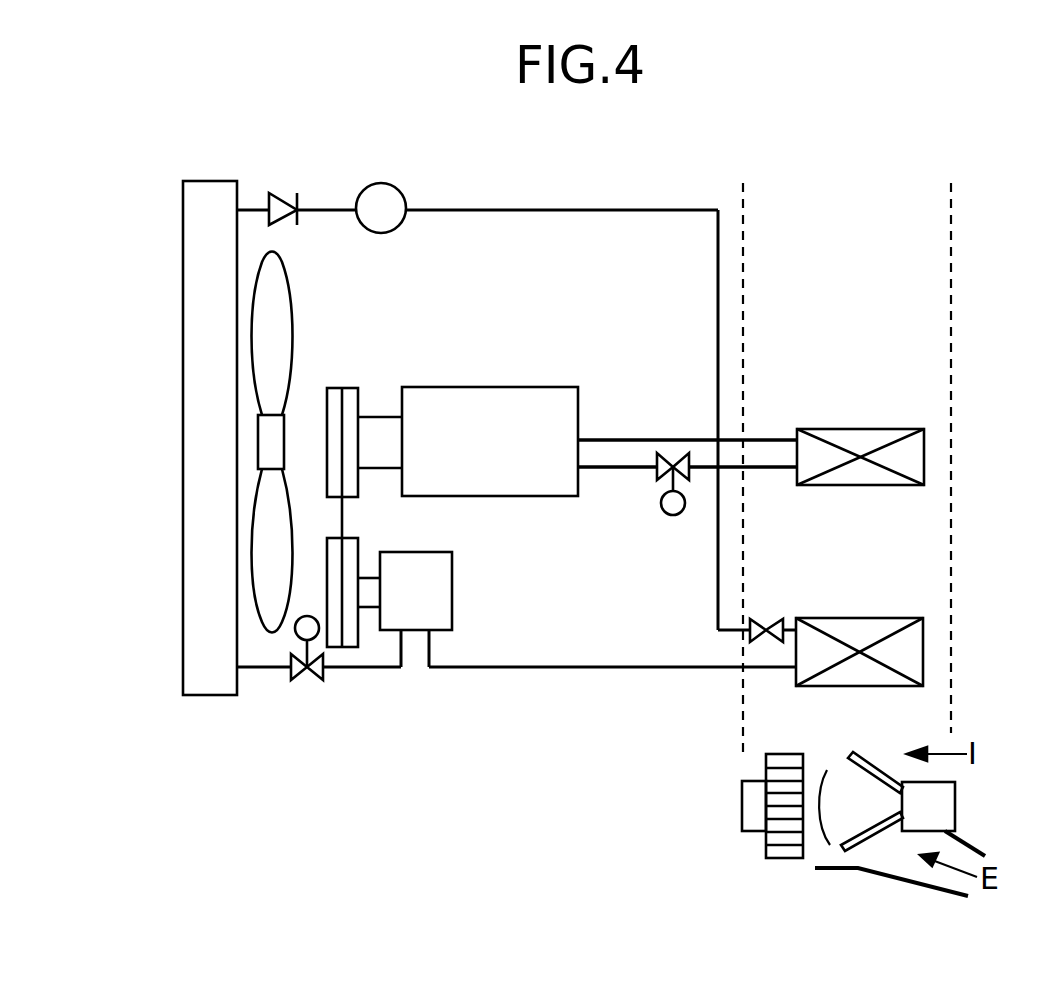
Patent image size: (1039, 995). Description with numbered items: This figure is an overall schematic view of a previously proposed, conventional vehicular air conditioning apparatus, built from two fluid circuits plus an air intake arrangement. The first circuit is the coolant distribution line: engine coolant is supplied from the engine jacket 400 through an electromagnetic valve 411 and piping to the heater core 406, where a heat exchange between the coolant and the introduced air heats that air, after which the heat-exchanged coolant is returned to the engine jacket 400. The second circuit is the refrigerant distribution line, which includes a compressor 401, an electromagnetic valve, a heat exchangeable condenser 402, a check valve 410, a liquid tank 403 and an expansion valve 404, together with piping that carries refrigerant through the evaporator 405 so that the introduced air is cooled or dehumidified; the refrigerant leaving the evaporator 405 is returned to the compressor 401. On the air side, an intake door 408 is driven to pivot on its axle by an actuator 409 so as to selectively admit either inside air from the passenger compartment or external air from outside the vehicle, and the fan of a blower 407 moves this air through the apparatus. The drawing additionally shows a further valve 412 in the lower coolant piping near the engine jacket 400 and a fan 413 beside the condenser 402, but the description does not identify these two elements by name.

The engine jacket 400 is at (516, 387).
The compressor 401 is at (452, 604).
The condenser 402 is at (237, 695).
The liquid tank 403 is at (399, 226).
The expansion valve 404 is at (766, 624).
The evaporator 405 is at (845, 618).
The heater core 406 is at (840, 429).
The blower 407 is at (752, 831).
The intake door 408 is at (870, 760).
The actuator 409 is at (955, 805).
The check valve 410 is at (298, 213).
The electromagnetic valve 411 is at (661, 476).
The control valve 412 is at (318, 676).
The cooling fan 413 is at (284, 377).